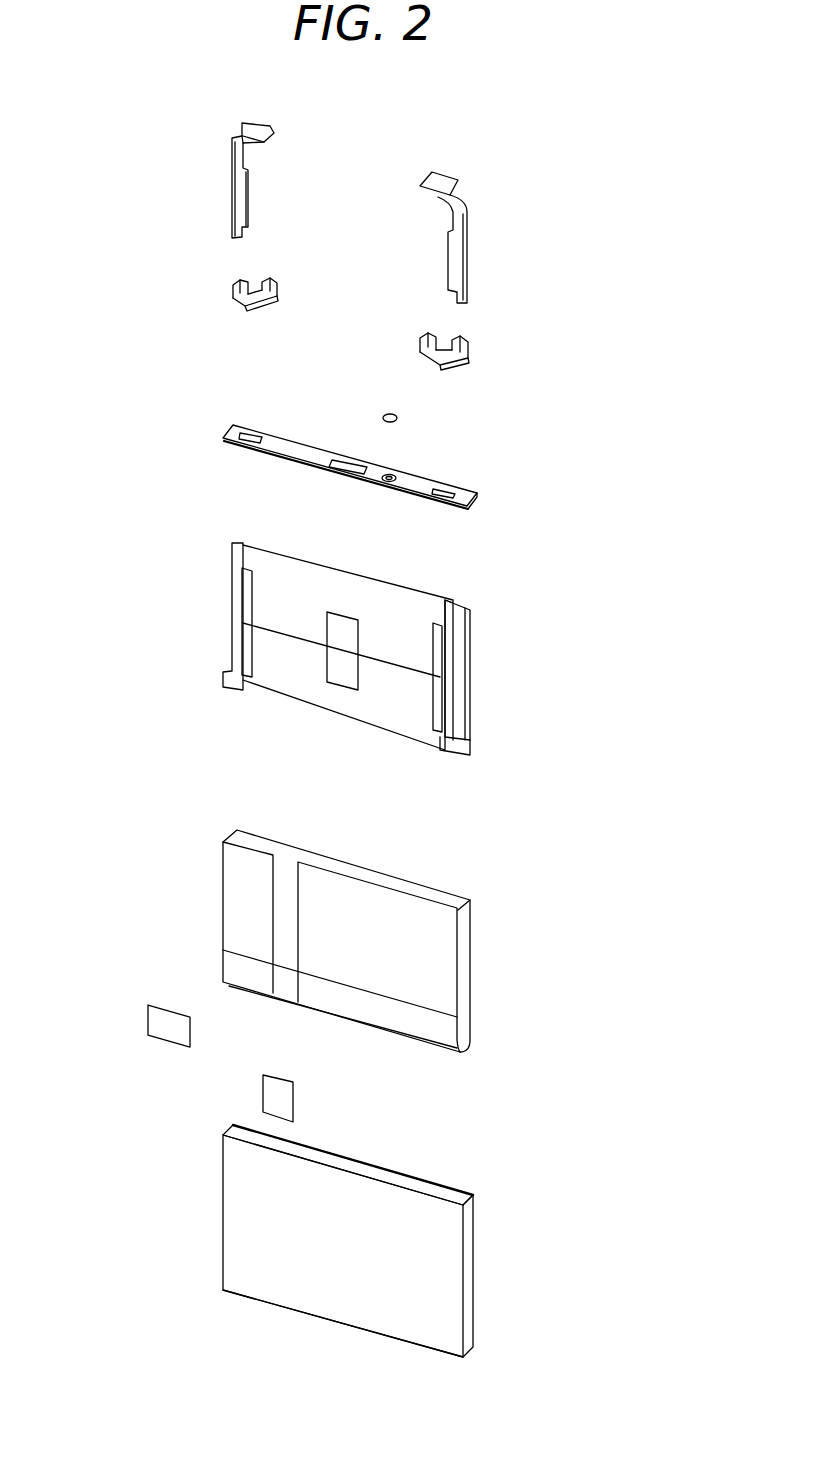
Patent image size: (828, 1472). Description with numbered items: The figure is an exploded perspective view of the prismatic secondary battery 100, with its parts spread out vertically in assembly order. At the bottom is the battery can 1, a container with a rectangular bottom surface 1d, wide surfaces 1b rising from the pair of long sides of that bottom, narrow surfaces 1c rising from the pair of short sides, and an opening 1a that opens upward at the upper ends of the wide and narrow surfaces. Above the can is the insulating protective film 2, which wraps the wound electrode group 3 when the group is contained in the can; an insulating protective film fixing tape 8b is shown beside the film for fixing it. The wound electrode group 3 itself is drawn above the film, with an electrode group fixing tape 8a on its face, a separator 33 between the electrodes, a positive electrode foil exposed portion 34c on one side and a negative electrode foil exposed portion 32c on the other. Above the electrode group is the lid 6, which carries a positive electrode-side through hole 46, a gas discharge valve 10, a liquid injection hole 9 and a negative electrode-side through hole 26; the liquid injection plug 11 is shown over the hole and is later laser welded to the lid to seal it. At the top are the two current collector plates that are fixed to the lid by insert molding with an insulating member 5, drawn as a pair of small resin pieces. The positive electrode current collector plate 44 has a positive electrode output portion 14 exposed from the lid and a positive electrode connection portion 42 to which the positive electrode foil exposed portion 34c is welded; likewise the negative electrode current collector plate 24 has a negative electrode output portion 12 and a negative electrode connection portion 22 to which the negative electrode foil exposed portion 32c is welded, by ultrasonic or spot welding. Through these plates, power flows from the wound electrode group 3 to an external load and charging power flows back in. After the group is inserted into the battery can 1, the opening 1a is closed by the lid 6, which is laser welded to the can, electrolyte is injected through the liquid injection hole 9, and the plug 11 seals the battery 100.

The prismatic secondary battery 100 is at (593, 158).
The battery can 1 is at (358, 1244).
The opening 1a is at (393, 1178).
The wide surface 1b is at (280, 1237).
The narrow surface 1c is at (465, 1273).
The bottom surface 1d is at (263, 1303).
The insulating protective film 2 is at (465, 928).
The wound electrode group 3 is at (358, 644).
The insulating member 5 is at (233, 287).
The lid 6 is at (354, 431).
The electrode group fixing tape 8a is at (342, 622).
The insulating protective film fixing tape 8b is at (158, 1020).
The liquid injection hole 9 is at (393, 477).
The gas discharge valve 10 is at (343, 462).
The liquid injection plug 11 is at (388, 417).
The negative electrode output portion 12 is at (440, 180).
The positive electrode output portion 14 is at (257, 127).
The negative electrode connection portion 22 is at (455, 272).
The negative electrode current collector plate 24 is at (504, 210).
The negative electrode-side through hole 26 is at (447, 495).
The negative electrode foil exposed portion 32c is at (457, 683).
The separator 33 is at (287, 672).
The positive electrode foil exposed portion 34c is at (237, 617).
The positive electrode connection portion 42 is at (213, 130).
The positive electrode current collector plate 44 is at (210, 151).
The positive electrode-side through hole 46 is at (250, 436).